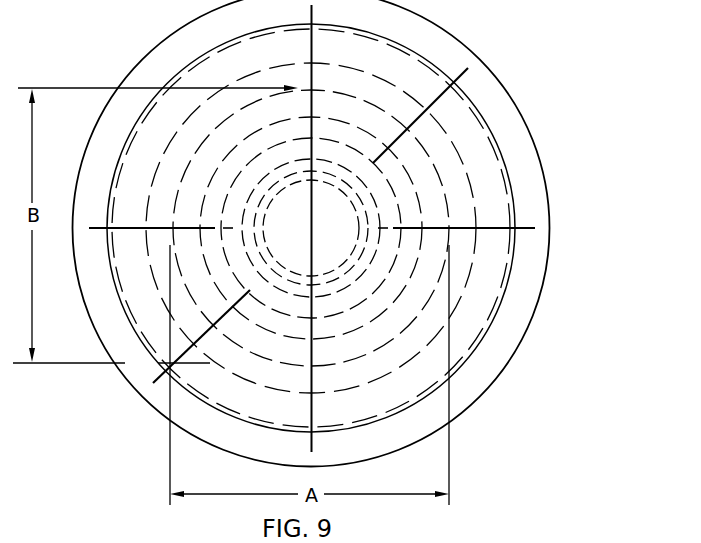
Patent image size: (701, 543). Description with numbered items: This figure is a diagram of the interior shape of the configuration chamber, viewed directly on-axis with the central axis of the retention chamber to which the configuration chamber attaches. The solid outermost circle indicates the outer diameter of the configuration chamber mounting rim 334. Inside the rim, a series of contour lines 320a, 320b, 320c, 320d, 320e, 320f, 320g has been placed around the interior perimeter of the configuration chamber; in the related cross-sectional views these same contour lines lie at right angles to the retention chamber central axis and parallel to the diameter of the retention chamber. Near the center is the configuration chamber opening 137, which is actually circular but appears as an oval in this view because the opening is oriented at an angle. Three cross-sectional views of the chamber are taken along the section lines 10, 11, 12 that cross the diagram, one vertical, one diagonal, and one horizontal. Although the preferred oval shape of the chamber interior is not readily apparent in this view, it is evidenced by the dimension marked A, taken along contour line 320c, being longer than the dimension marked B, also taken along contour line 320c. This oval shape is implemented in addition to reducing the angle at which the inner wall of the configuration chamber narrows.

The configuration chamber mounting rim 334 is at (448, 32).
The contour line 320a is at (508, 270).
The contour line 320b is at (478, 206).
The contour line 320c is at (450, 203).
The contour line 320d is at (430, 200).
The contour line 320e is at (410, 197).
The contour line 320f is at (392, 190).
The contour line 320g is at (378, 176).
The configuration chamber opening 137 is at (342, 200).
The section line 10- 10 is at (340, 6).
The section line 11- 11 is at (482, 82).
The section line 12- 12 is at (89, 245).